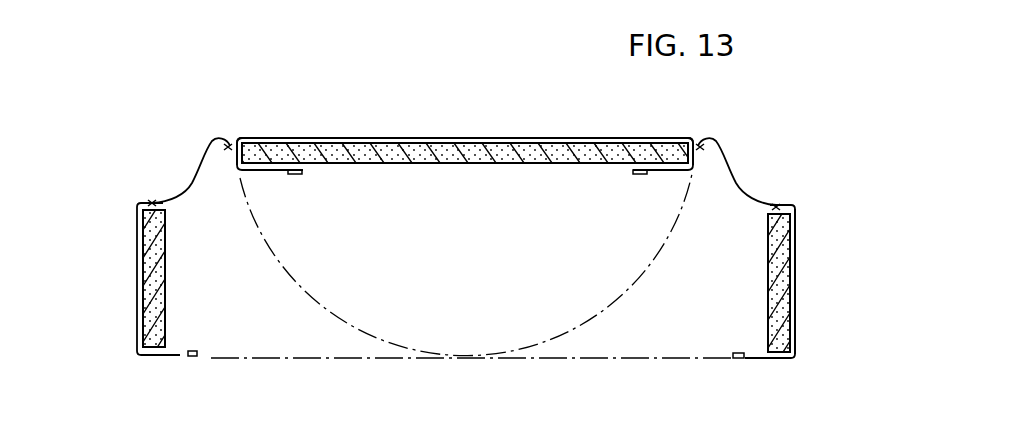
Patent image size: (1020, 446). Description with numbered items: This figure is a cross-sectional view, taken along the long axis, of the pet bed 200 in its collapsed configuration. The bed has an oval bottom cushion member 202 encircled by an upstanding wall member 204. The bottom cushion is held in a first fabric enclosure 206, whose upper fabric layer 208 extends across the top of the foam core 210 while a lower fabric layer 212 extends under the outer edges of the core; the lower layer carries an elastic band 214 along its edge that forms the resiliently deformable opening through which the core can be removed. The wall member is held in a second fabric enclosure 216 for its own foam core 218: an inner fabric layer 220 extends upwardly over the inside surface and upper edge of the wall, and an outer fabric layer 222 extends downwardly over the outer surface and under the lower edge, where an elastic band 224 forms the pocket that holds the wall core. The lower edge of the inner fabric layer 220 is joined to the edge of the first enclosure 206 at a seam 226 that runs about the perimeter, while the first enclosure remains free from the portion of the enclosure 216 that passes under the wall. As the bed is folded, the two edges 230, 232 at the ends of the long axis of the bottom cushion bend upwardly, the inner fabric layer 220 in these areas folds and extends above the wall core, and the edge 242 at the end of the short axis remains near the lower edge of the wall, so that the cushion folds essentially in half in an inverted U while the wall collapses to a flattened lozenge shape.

The pet bed 200 is at (184, 148).
The bottom cushion member 202 is at (347, 138).
The wall member 204 is at (136, 254).
The first fabric enclosure 206 is at (407, 140).
The upper fabric layer 208 is at (530, 138).
The foam core 210 is at (472, 152).
The lower fabric layer 212 is at (652, 177).
The elastic band 214 is at (305, 171).
The second fabric enclosure 216 is at (795, 222).
The foam core 218 is at (790, 250).
The inner fabric layer 220 is at (184, 184).
The outer fabric layer 222 is at (800, 272).
The elastic band 224 is at (738, 352).
The seam 226 is at (230, 143).
The edge of the bottom cushion 230 is at (243, 140).
The edge of the bottom cushion 232 is at (687, 136).
The edge of the bottom cushion 242 is at (477, 361).